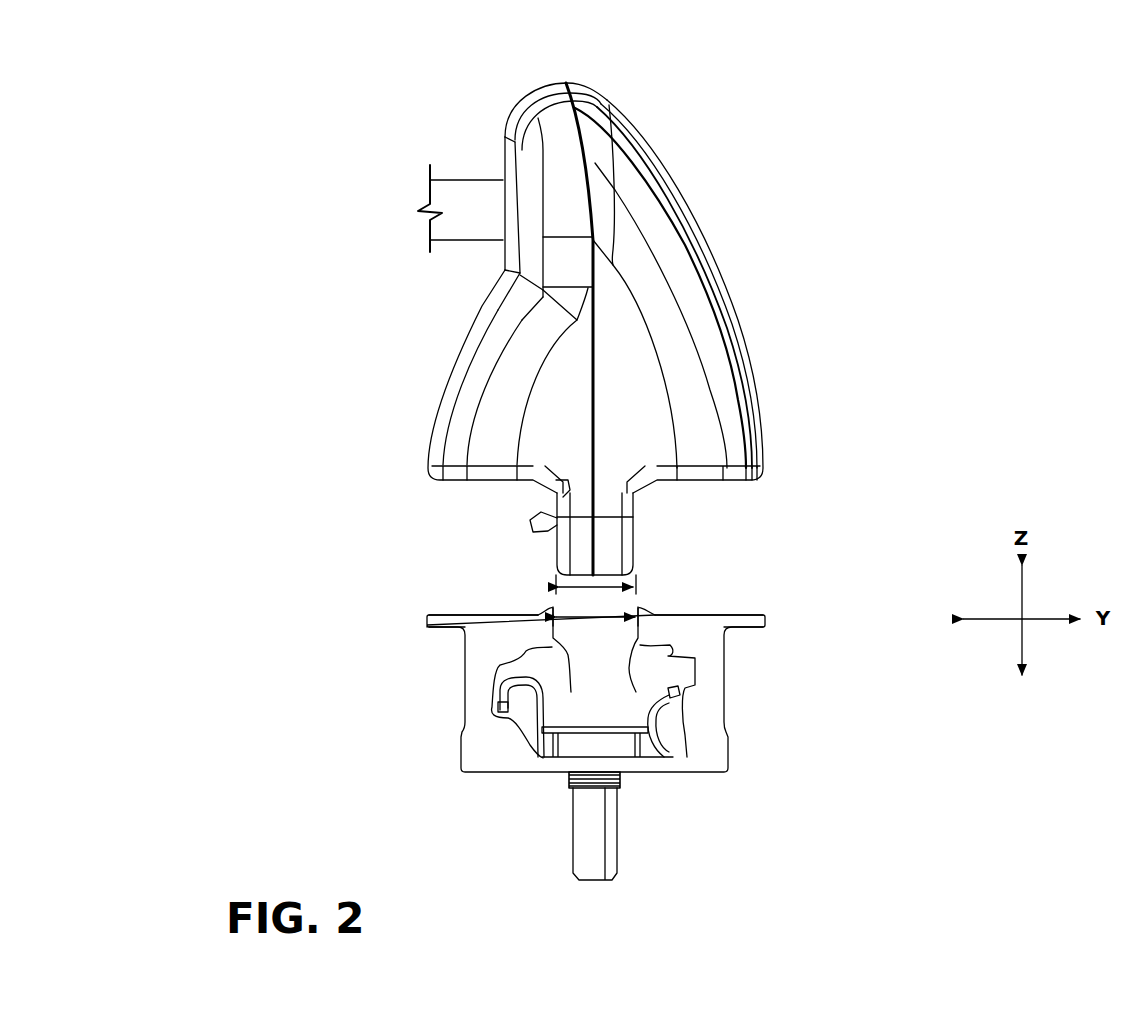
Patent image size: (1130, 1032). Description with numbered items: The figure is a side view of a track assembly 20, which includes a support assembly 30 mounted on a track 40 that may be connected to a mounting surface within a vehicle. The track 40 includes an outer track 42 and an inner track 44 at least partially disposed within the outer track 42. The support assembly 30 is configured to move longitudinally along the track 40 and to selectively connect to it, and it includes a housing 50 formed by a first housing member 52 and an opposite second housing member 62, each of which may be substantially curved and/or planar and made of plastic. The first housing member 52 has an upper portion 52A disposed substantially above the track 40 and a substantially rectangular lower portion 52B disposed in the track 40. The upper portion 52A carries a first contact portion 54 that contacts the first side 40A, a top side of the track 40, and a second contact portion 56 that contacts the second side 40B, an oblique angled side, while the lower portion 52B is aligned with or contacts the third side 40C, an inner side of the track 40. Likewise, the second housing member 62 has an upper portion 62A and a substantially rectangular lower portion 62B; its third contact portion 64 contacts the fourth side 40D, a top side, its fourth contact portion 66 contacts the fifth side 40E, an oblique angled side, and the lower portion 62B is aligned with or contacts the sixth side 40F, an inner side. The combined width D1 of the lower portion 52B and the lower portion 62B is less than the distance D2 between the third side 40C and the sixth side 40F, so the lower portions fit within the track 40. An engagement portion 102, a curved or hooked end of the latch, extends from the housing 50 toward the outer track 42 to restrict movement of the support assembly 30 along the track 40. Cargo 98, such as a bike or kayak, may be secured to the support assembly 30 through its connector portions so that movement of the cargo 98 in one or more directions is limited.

The track assembly 20 is at (789, 117).
The support assembly 30 is at (798, 325).
The track 40 is at (782, 713).
The first side of track 40A is at (738, 620).
The second side of track 40B is at (651, 612).
The third side of track 40C is at (624, 660).
The fourth side of track 40D is at (450, 622).
The fifth side of track 40E is at (548, 611).
The sixth side of track 40F is at (573, 660).
The outer track 42 is at (764, 627).
The inner track 44 is at (670, 738).
The housing 50 is at (477, 87).
The first housing member 52 is at (764, 412).
The upper portion of first housing member 52A is at (677, 258).
The lower portion of first housing member 52B is at (630, 543).
The first contact portion 54 is at (698, 481).
The second contact portion 56 is at (650, 488).
The second housing member 62 is at (456, 318).
The upper portion of second housing member 62A is at (455, 390).
The lower portion of second housing member 62B is at (560, 562).
The third contact portion 64 is at (487, 483).
The fourth contact portion 66 is at (543, 490).
The cargo 98 is at (465, 180).
The engagement portion 102 is at (530, 517).
The combined width D1 is at (607, 592).
The distance D2 is at (587, 619).